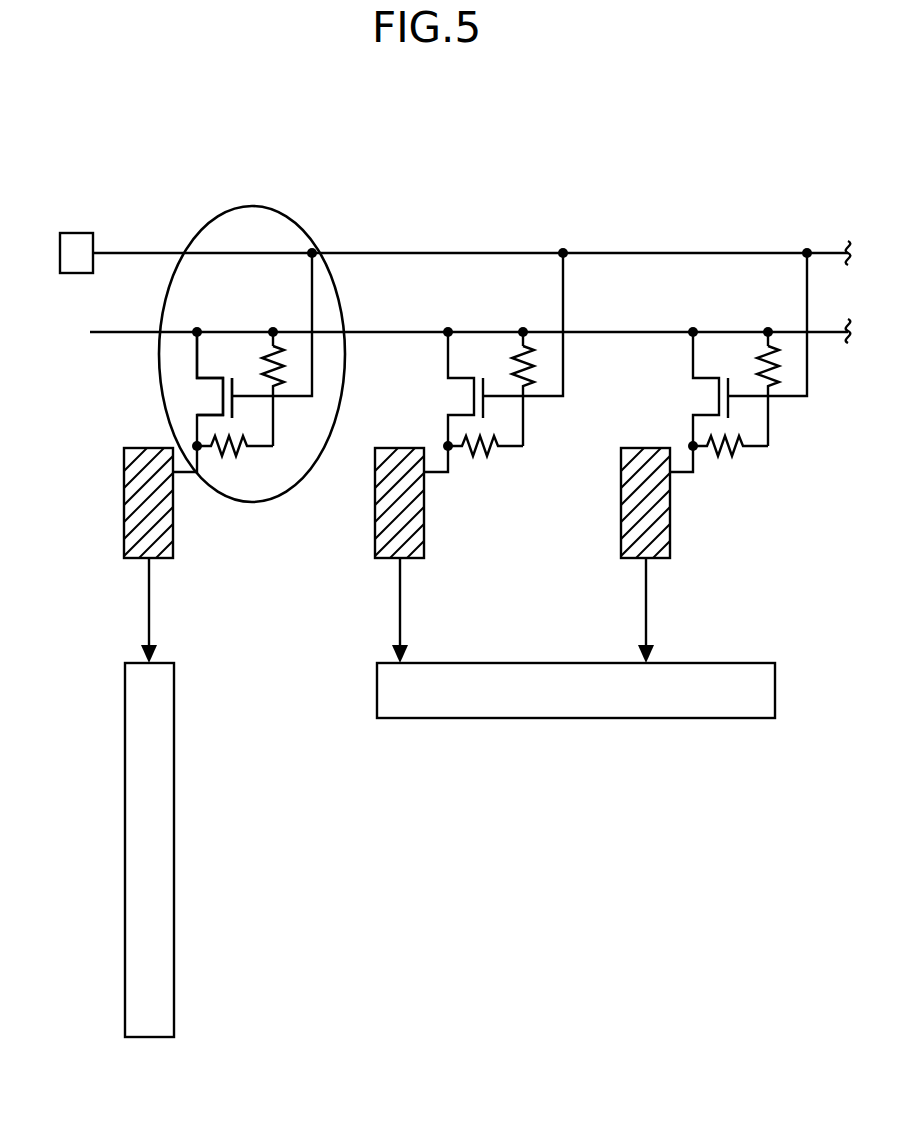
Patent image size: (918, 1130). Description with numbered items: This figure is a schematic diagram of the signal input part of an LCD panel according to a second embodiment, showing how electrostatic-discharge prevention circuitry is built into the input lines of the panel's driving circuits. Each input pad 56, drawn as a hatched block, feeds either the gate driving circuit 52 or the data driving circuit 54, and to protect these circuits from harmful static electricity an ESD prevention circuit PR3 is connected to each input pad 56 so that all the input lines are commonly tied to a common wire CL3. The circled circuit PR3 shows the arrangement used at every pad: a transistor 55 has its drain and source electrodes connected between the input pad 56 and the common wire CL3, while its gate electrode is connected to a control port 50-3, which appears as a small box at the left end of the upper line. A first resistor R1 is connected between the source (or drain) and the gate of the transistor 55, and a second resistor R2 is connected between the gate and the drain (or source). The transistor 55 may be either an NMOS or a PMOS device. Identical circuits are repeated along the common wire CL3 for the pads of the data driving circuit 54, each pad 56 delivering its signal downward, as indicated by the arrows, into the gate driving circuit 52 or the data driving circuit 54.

The control port 50-3 is at (75, 233).
The ESD prevention circuit PR3 is at (327, 209).
The common wire CL3 is at (441, 331).
The transistor 55 is at (180, 395).
The second resistor R2 is at (248, 395).
The first resistor R1 is at (235, 432).
The input pad 56 is at (173, 542).
The gate driving circuit 52 is at (125, 780).
The data driving circuit 54 is at (567, 718).